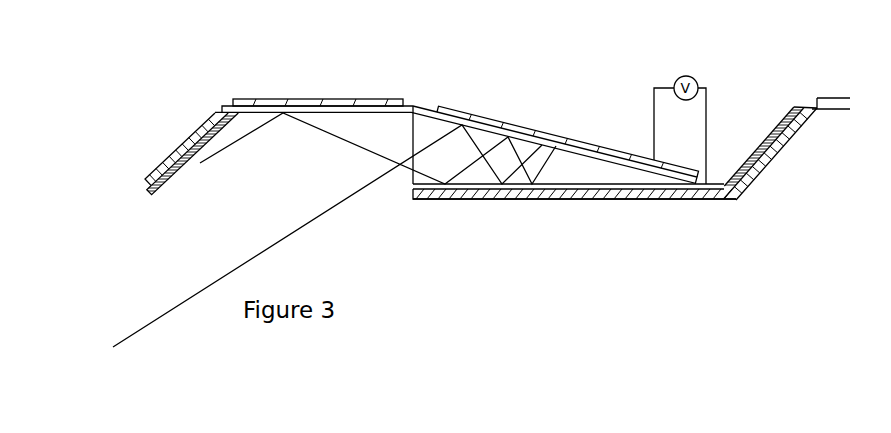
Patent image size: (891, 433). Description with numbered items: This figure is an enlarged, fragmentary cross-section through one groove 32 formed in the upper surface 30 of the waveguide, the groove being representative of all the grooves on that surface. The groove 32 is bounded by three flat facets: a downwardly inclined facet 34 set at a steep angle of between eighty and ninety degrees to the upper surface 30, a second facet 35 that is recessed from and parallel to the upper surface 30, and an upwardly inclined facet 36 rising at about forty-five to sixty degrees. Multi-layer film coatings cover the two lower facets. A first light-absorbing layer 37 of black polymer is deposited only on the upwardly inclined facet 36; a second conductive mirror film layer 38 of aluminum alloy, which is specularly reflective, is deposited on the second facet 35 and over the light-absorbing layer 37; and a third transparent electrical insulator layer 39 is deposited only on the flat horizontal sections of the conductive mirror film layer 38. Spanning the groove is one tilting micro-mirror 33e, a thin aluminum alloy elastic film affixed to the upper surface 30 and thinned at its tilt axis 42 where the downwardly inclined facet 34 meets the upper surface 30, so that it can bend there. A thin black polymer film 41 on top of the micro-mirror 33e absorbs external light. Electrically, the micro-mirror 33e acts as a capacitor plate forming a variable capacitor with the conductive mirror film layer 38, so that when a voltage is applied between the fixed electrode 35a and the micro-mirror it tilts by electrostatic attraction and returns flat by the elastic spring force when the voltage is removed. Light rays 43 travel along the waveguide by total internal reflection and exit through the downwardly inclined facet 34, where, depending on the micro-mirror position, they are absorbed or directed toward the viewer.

The upper surface 30 is at (812, 108).
The groove 32 is at (748, 103).
The tilting micro-mirror 33e is at (556, 140).
The downwardly inclined facet 34 is at (411, 134).
The second facet 35 is at (482, 200).
The fixed electrode 35a is at (587, 200).
The upwardly inclined facet 36 is at (162, 195).
The light-absorbing layer 37 is at (185, 165).
The conductive mirror film layer 38 is at (172, 157).
The transparent electrical insulator layer 39 is at (662, 199).
The black polymer film 41 is at (278, 99).
The tilt axis 42 is at (418, 105).
The light rays 43 is at (260, 254).